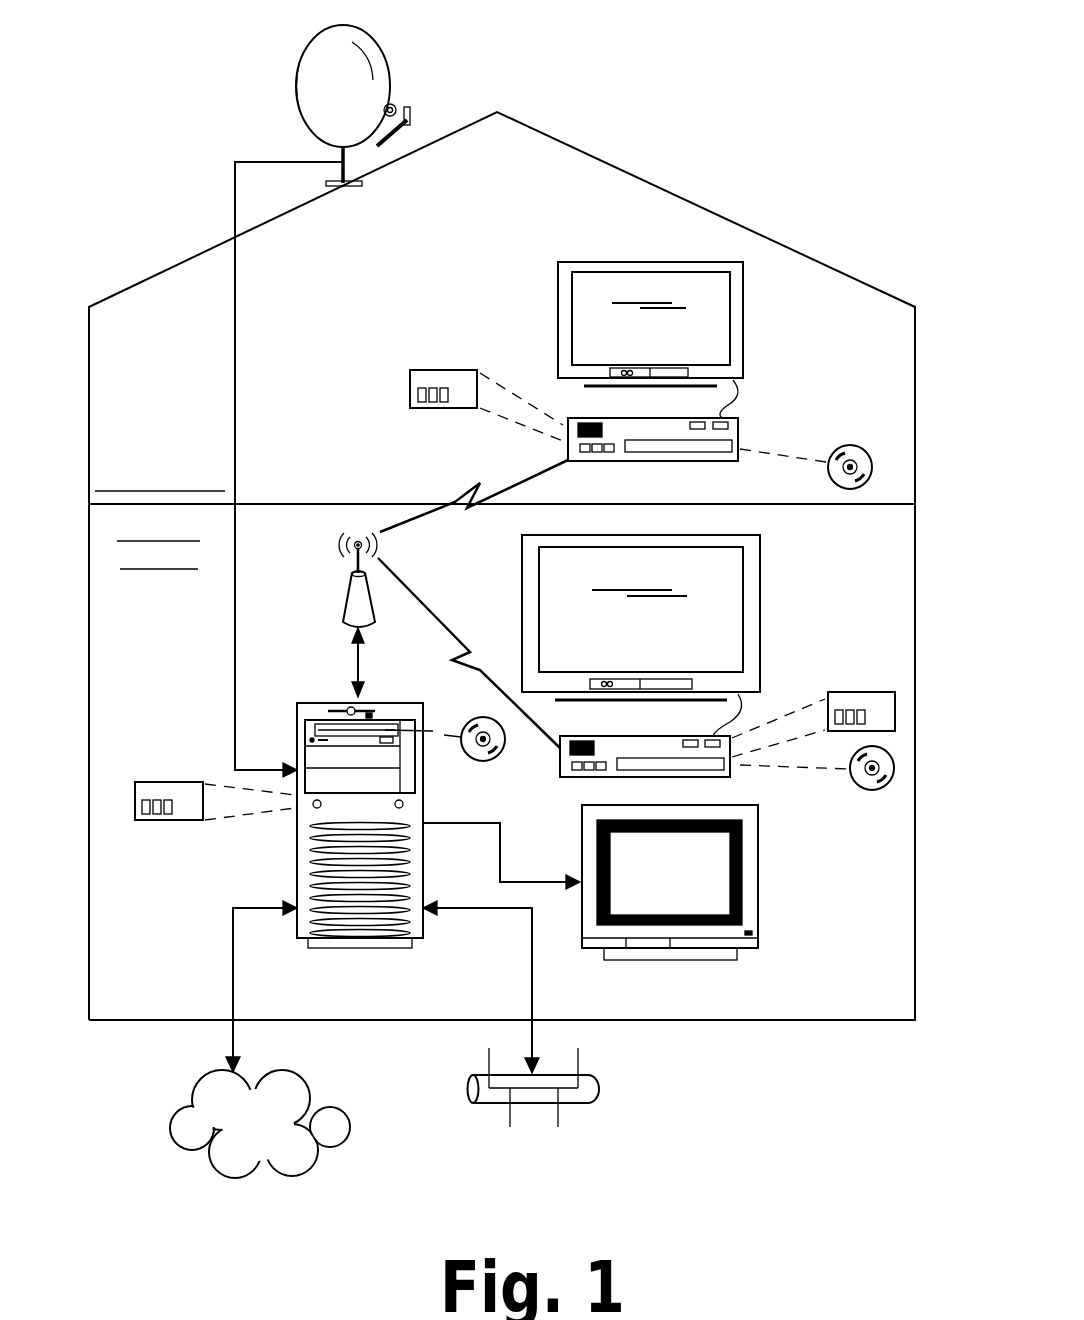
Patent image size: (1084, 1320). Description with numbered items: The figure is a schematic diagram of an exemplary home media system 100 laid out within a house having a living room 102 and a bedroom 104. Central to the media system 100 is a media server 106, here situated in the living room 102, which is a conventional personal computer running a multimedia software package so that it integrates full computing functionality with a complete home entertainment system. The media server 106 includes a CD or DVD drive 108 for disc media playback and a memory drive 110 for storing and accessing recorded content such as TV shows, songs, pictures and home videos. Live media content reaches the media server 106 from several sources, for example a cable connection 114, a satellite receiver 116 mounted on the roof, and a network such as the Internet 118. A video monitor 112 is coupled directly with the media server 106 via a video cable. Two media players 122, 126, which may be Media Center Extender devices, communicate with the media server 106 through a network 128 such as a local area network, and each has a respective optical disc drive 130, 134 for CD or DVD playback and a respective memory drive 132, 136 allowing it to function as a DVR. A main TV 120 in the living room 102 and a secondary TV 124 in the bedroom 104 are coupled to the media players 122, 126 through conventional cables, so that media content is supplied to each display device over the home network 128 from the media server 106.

The home media system 100 is at (736, 110).
The living room 102 is at (833, 1022).
The bedroom 104 is at (217, 238).
The media server 106 is at (322, 703).
The CD or DVD drive 108 is at (510, 762).
The memory drive 110 is at (168, 782).
The video monitor 112 is at (760, 880).
The cable connection 114 is at (600, 1088).
The satellite receiver 116 is at (327, 50).
The Internet 118 is at (172, 1128).
The main TV 120 is at (762, 617).
The media player 122 is at (590, 778).
The secondary TV 124 is at (637, 262).
The media player 126 is at (740, 436).
The network 128 is at (343, 605).
The optical disc drive 130 is at (880, 790).
The memory drive 132 is at (870, 692).
The optical disc drive 134 is at (872, 446).
The memory drive 136 is at (405, 385).